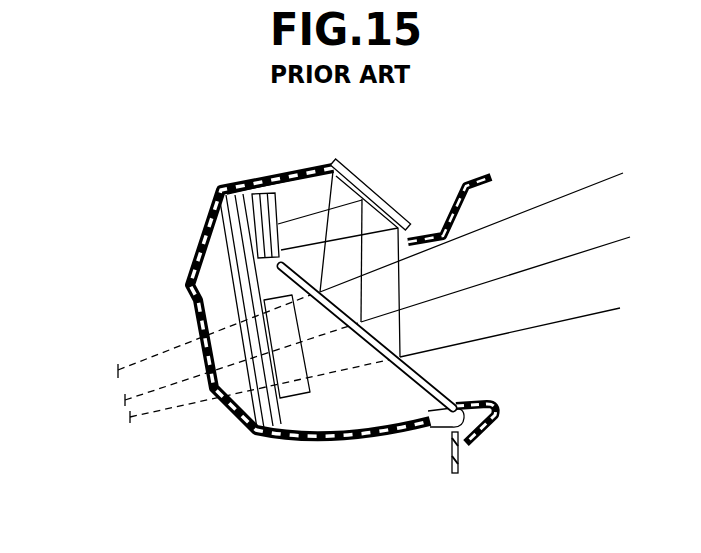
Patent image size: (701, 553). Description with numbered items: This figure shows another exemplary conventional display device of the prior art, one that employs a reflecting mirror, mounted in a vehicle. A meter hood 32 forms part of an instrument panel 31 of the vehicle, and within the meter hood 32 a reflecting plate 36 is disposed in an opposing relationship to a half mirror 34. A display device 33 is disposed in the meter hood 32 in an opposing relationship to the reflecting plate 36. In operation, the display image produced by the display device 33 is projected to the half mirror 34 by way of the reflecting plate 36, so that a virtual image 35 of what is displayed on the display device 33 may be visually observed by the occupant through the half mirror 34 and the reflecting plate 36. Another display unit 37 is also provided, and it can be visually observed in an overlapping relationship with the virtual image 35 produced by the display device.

The instrument panel 31 is at (440, 458).
The meter hood 32 is at (458, 168).
The display device 33 is at (265, 193).
The half mirror 34 is at (440, 384).
The virtual image 35 is at (120, 390).
The reflecting plate 36 is at (372, 193).
The another display unit 37 is at (293, 393).